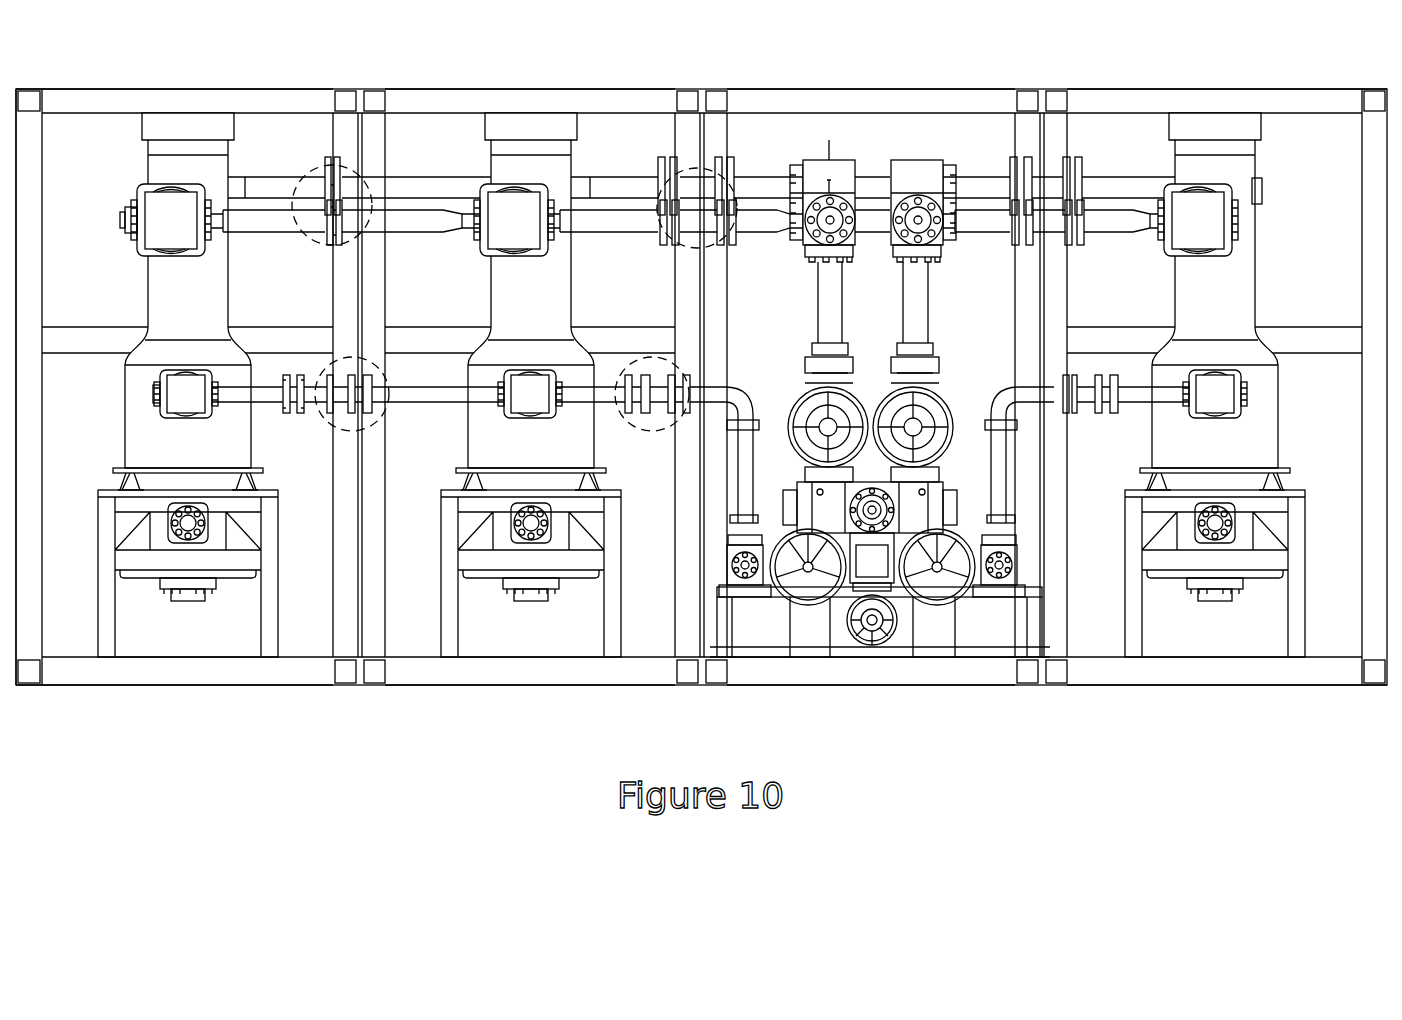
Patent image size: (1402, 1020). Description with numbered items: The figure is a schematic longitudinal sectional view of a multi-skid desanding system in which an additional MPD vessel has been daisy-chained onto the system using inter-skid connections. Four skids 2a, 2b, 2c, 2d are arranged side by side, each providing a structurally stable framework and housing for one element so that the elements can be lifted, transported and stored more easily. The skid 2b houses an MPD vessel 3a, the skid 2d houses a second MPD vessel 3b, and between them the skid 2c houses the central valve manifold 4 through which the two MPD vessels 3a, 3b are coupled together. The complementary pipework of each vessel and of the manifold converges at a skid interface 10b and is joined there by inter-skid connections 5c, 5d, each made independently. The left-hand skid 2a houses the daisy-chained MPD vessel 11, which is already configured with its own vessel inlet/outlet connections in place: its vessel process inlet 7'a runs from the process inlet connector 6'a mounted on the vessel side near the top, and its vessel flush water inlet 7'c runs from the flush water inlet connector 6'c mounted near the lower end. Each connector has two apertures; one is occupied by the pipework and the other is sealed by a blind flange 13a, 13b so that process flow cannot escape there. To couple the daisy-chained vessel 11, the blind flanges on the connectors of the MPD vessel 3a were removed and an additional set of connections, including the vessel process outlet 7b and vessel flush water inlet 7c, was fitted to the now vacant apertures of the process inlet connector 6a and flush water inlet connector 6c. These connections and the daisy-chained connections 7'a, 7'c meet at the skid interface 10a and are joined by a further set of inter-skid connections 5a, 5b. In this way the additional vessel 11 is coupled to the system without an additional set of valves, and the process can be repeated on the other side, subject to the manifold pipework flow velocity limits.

The skid 2a is at (220, 688).
The skid 2b is at (556, 688).
The skid 2c is at (871, 688).
The skid 2d is at (1235, 688).
The MPD vessel 3a is at (548, 283).
The MPD vessel 3b is at (1233, 287).
The central valve manifold 4 is at (863, 573).
The inter-skid connection 5a is at (315, 160).
The inter-skid connection 5b is at (348, 427).
The inter-skid connection 5c is at (728, 170).
The inter-skid connection 5d is at (647, 425).
The process inlet connector 6'a is at (139, 207).
The process inlet connector 6a is at (500, 227).
The flush water inlet connector 6'c is at (142, 414).
The flush water inlet connector 6c is at (530, 395).
The vessel process inlet 7'a is at (268, 201).
The vessel process outlet 7b is at (417, 187).
The vessel flush water inlet 7'c is at (269, 420).
The vessel flush water inlet 7c is at (432, 395).
The skid interface 10a is at (358, 294).
The skid interface 10b is at (700, 293).
The daisy-chained MPD vessel 11 is at (167, 290).
The blind flange 13a is at (126, 222).
The blind flange 13b is at (147, 397).